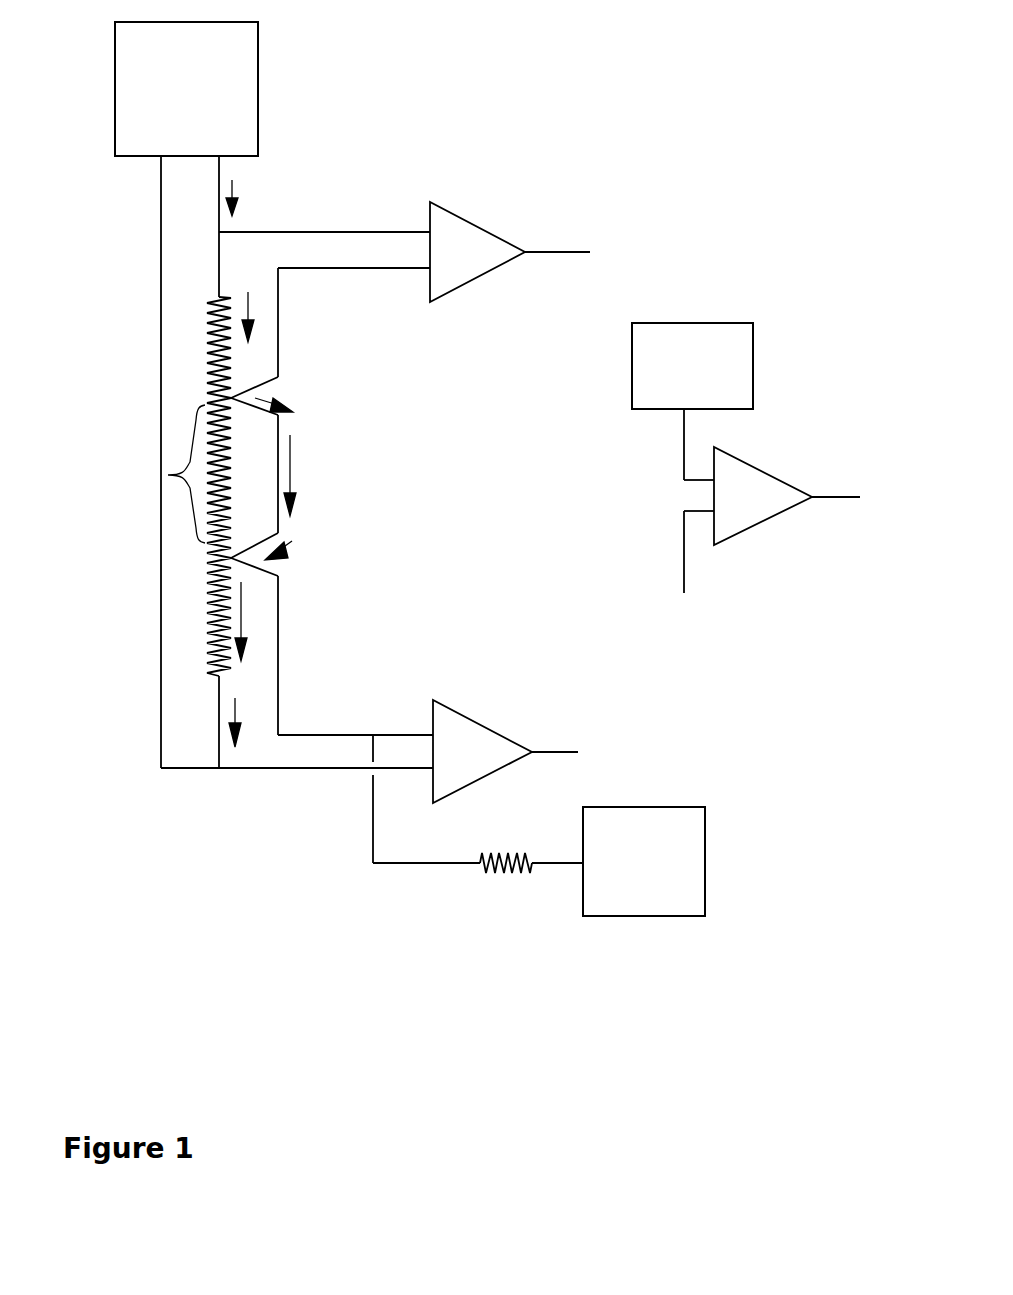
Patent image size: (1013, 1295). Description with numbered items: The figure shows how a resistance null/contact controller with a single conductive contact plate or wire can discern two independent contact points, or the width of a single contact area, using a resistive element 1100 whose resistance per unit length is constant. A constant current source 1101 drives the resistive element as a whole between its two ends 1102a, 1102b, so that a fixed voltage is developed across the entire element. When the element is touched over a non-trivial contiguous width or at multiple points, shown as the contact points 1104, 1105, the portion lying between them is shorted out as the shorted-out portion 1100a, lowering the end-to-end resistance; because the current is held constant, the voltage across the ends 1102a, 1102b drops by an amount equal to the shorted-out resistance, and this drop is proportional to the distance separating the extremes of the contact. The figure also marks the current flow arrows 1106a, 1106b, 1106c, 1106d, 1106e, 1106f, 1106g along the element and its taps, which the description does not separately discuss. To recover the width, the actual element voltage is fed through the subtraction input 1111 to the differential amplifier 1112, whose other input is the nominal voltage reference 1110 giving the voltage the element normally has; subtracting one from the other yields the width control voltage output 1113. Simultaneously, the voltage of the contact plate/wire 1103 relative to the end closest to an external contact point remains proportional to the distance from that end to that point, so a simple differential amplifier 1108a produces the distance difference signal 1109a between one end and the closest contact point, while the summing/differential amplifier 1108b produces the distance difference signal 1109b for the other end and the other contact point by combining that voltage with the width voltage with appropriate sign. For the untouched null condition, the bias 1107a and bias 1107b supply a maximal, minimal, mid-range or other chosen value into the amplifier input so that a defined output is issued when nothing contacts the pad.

The resistive element 1100 is at (205, 333).
The shorted-out portion of resistive element 1100a is at (148, 474).
The constant current source 1101 is at (262, 67).
The end of resistive element 1102a is at (222, 171).
The end of resistive element 1102b is at (160, 213).
The contact plate/wire 1103 is at (283, 333).
The contact point 1104 is at (205, 392).
The contact point 1105 is at (205, 545).
The current flow arrow 1106a is at (245, 190).
The current flow arrow 1106b is at (258, 303).
The current flow arrow 1106c is at (285, 398).
The current flow arrow 1106d is at (296, 463).
The current flow arrow 1106e is at (295, 551).
The current flow arrow 1106f is at (247, 615).
The current flow arrow 1106g is at (240, 713).
The bias 1107a is at (646, 806).
The bias 1107b is at (513, 843).
The differential amplifier 1108a is at (470, 289).
The differential amplifier 1108b is at (480, 717).
The distance difference signal 1109a is at (556, 250).
The distance difference signal 1109b is at (562, 745).
The nominal voltage reference 1110 is at (722, 318).
The subtraction input 1111 is at (682, 567).
The differential amplifier 1112 is at (778, 521).
The width control voltage output 1113 is at (830, 490).